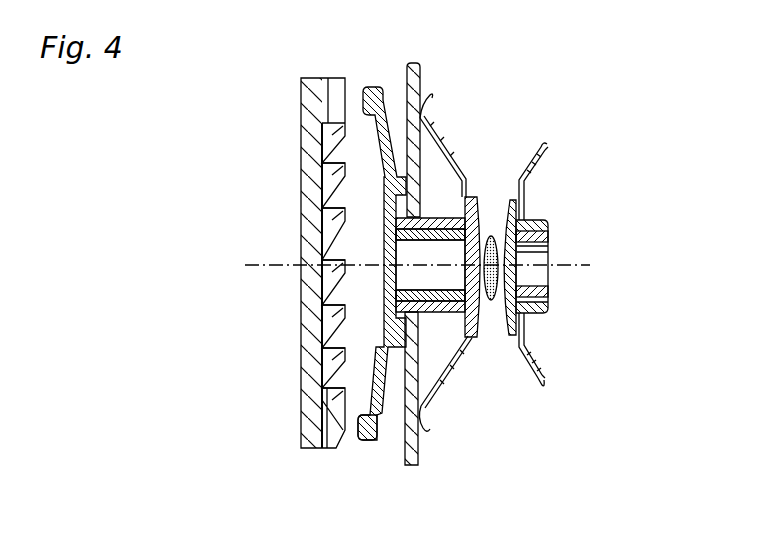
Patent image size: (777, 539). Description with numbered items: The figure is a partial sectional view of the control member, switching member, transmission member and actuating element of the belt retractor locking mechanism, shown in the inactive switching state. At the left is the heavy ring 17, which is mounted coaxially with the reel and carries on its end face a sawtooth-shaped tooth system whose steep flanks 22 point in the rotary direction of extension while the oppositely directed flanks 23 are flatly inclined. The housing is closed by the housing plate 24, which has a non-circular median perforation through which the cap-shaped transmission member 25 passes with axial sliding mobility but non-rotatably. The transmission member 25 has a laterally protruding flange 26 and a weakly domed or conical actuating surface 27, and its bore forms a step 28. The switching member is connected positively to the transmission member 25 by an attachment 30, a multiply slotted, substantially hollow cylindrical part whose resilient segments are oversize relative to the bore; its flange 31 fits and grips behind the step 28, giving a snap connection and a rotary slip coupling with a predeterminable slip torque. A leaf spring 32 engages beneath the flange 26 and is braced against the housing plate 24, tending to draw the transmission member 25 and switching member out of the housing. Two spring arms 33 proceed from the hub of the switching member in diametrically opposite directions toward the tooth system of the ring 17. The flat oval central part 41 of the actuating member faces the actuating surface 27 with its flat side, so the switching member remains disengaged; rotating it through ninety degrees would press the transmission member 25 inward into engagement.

The heavy ring 17 is at (305, 402).
The steep flanks 22 is at (332, 202).
The oppositely directed flanks 23 is at (335, 235).
The housing plate 24 is at (410, 62).
The transmission member 25 is at (385, 308).
The flange 26 is at (474, 210).
The actuating surface 27 is at (520, 337).
The step 28 is at (523, 222).
The attachment 30 is at (395, 298).
The flange 31 is at (548, 296).
The leaf spring 32 is at (440, 372).
The spring arms 33 is at (370, 413).
The central part 41 is at (515, 257).